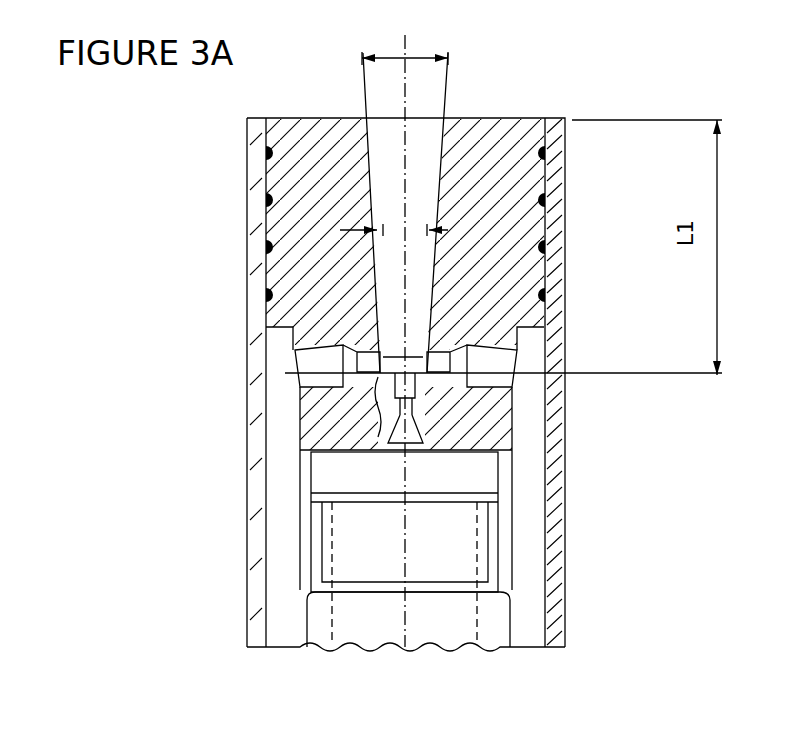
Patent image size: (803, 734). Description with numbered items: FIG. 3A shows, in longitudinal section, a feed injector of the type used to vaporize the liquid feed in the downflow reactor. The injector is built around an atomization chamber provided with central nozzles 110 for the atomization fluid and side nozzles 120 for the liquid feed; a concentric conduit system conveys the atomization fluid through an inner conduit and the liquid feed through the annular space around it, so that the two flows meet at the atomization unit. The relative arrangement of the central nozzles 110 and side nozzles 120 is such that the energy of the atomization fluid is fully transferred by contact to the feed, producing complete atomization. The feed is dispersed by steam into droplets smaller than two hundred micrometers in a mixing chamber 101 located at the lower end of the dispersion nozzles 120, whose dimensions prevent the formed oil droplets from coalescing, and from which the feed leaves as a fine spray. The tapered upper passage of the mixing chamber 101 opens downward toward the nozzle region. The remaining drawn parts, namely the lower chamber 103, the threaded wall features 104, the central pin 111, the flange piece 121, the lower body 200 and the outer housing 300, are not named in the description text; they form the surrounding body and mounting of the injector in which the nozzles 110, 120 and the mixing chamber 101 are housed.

The mixing chamber 101 is at (422, 138).
The chamber 103 is at (392, 460).
The thread 104 is at (267, 200).
The central nozzles 110 is at (380, 412).
The valve pin 111 is at (427, 433).
The side nozzles 120 is at (375, 343).
The flange 121 is at (520, 375).
The lower housing part 200 is at (493, 625).
The housing 300 is at (558, 525).